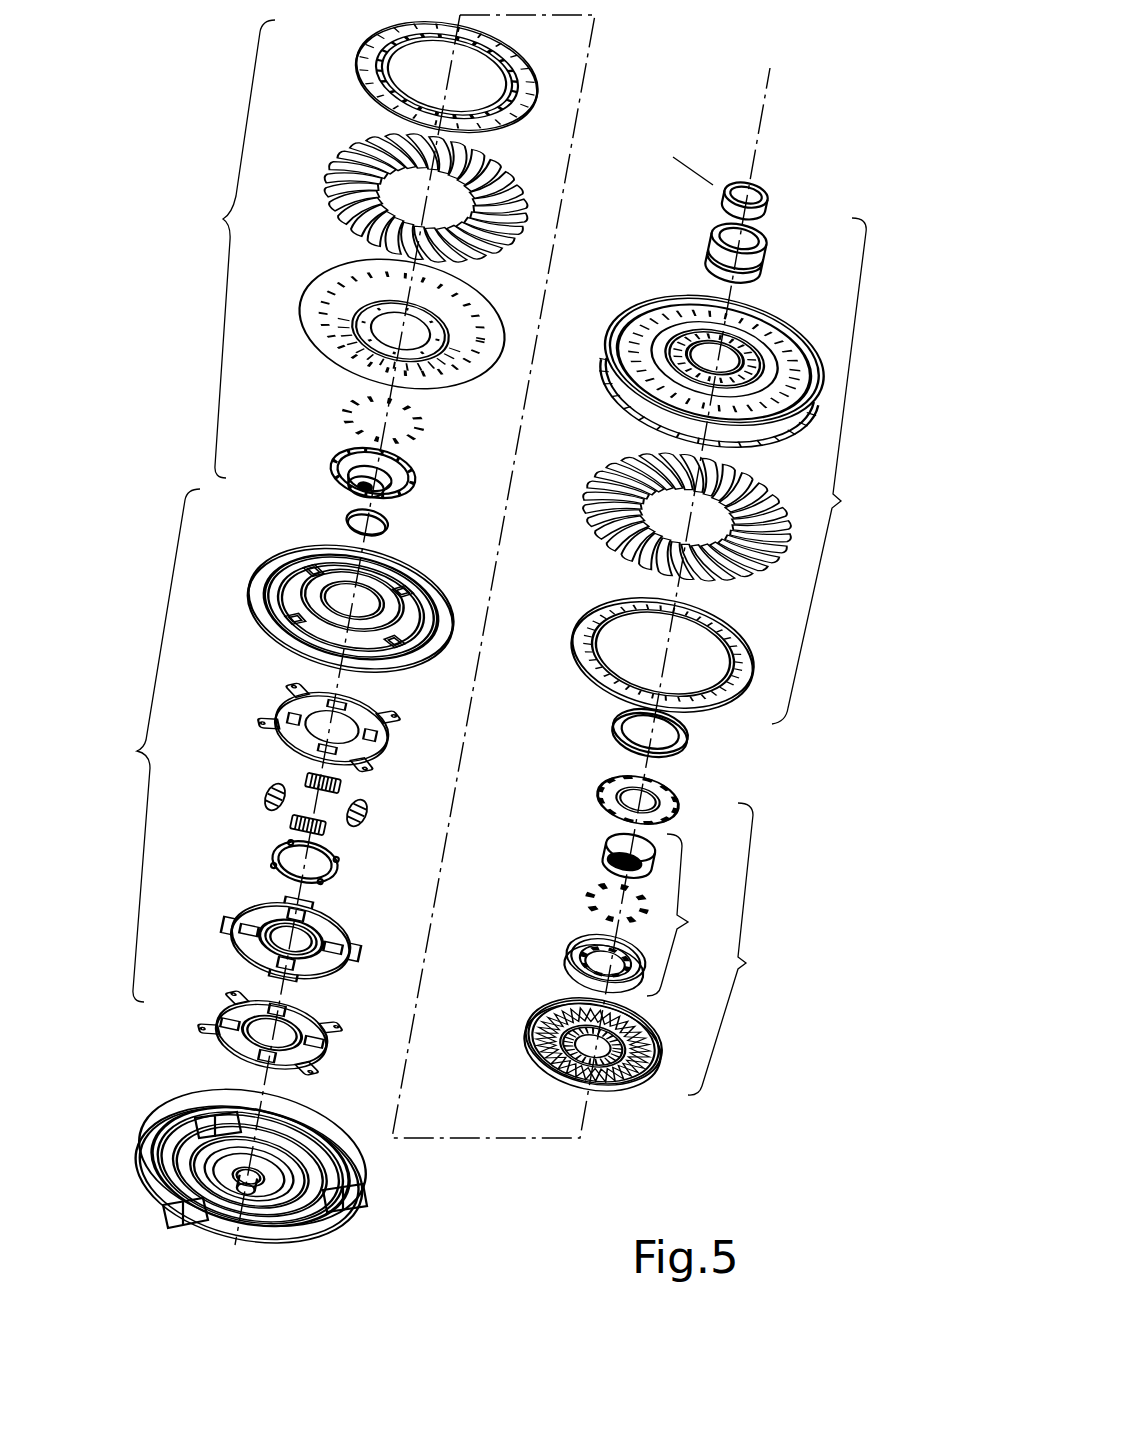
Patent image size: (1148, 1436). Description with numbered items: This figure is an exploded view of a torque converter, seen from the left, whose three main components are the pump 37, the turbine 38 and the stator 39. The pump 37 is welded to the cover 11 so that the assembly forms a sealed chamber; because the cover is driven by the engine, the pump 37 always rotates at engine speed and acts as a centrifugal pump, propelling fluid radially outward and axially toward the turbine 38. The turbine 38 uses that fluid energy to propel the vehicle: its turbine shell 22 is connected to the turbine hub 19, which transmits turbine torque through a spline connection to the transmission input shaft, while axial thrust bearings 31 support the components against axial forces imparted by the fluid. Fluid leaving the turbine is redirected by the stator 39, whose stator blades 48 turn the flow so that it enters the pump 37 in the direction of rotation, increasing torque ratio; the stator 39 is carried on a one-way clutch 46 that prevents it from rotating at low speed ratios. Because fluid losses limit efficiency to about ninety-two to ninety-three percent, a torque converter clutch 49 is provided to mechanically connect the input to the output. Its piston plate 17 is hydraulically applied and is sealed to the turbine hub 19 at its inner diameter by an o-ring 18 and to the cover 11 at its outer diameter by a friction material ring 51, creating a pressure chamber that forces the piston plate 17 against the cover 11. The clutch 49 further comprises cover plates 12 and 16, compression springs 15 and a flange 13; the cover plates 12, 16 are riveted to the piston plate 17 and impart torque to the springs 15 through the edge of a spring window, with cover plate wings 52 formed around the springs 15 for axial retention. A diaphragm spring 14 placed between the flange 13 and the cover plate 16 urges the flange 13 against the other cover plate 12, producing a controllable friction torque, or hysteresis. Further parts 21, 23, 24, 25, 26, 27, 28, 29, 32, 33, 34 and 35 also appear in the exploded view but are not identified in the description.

The cover 11 is at (168, 1085).
The cover plate 12 is at (207, 998).
The flange 13 is at (222, 905).
The diaphragm spring 14 is at (260, 848).
The compression springs 15 is at (252, 770).
The cover plate 16 is at (252, 688).
The piston plate 17 is at (246, 554).
The o-ring 18 is at (328, 505).
The turbine hub 19 is at (318, 450).
The bolts 21 is at (337, 398).
The turbine shell 22 is at (307, 285).
The turbine blades 23 is at (328, 158).
The turbine core ring 24 is at (350, 63).
The stator 25 is at (515, 1010).
The race 26 is at (560, 945).
The rollers 27 is at (577, 892).
The bearing cup 28 is at (588, 833).
The washer 29 is at (588, 776).
The axial thrust bearings 31 is at (597, 713).
The pump core ring 32 is at (580, 595).
The pump blades 33 is at (595, 452).
The pump shell 34 is at (627, 293).
The bushing 35 is at (695, 240).
The pump 37 is at (834, 471).
The turbine 38 is at (229, 249).
The stator 39 is at (745, 949).
The one-way clutch 46 is at (693, 915).
The stator blades 48 is at (527, 1036).
The torque converter clutch 49 is at (149, 745).
The friction material ring 51 is at (255, 608).
The cover plate wings 52 is at (220, 1030).